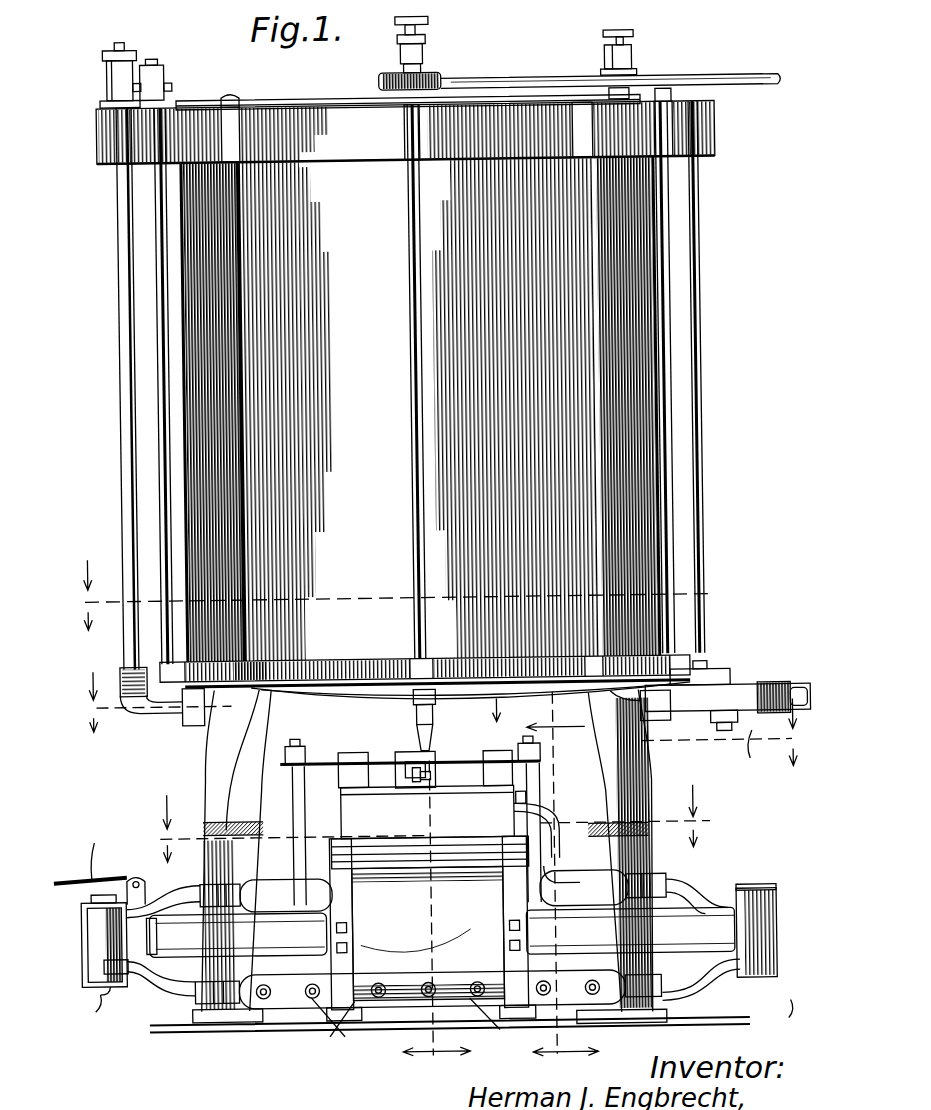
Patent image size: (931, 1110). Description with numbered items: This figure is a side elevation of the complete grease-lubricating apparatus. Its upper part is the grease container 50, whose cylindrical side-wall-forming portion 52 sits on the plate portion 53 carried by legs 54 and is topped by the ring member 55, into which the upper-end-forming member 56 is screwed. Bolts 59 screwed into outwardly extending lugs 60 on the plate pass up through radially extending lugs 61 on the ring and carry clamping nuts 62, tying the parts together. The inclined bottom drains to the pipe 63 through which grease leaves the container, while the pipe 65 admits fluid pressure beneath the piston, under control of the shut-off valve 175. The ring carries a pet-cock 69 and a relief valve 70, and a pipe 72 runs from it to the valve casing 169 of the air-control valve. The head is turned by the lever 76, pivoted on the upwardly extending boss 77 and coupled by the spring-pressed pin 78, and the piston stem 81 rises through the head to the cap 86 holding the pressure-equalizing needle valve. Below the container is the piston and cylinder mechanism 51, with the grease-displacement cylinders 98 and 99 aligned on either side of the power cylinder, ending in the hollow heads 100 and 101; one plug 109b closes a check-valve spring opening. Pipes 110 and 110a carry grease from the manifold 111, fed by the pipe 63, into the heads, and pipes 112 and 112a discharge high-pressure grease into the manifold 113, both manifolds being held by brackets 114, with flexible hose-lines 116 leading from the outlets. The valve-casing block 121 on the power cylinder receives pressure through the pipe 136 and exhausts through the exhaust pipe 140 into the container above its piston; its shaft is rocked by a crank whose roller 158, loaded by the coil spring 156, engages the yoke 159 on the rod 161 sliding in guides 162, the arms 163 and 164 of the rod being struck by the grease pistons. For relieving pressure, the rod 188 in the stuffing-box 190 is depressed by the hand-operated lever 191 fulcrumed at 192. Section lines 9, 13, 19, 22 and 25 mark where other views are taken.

The section line 9 is at (390, 591).
The section line 13— 13 is at (437, 719).
The section line 19— 19 is at (436, 823).
The section line 22 is at (562, 886).
The section line 25 is at (435, 922).
The grease container 50 is at (187, 327).
The piston and cylinder mechanism 51 is at (430, 928).
The cylindrical side-wall-forming portion 52 is at (660, 399).
The plate portion 53 is at (460, 666).
The legs 54 is at (208, 756).
The ring member 55 is at (405, 132).
The upper-end-forming member 56 is at (368, 101).
The bolts 59 is at (164, 216).
The outwardly extending lugs 60 is at (161, 663).
The radially extending lugs 61 is at (413, 133).
The clamping nuts 62 is at (242, 95).
The pipe 63 is at (429, 745).
The pipe 65 is at (658, 715).
The pet-cock 69 is at (163, 85).
The relief valve 70 is at (113, 66).
The pipe 72 is at (702, 264).
The lever 76 is at (517, 80).
The upwardly extending boss 77 is at (440, 73).
The spring-pressed pin 78 is at (626, 92).
The stem 81 is at (410, 66).
The cap 86 is at (432, 43).
The grease-displacement cylinder 98 is at (236, 935).
The grease-displacement cylinder 99 is at (630, 930).
The hollow head 100 is at (86, 912).
The hollow head 101 is at (773, 925).
The plug 109b is at (428, 1015).
The pipe 110 is at (164, 891).
The pipe 110a is at (686, 898).
The manifold 111 is at (602, 854).
The pipe 112 is at (159, 984).
The pipe 112a is at (704, 992).
The manifold 113 is at (282, 997).
The brackets 114 is at (415, 933).
The flexible hose-lines 116 is at (420, 1027).
The valve-casing block 121 is at (430, 827).
The pipe 136 is at (569, 861).
The exhaust pipe 140 is at (127, 262).
The coil spring 156 is at (416, 790).
The roller 158 is at (392, 791).
The yoke 159 is at (406, 757).
The rod 161 is at (310, 759).
The guides 162 is at (348, 751).
The arm 163 is at (297, 794).
The arm 164 is at (583, 802).
The valve casing 169 is at (707, 692).
The shut-off valve 175 is at (752, 758).
The rod 188 is at (95, 848).
The stuffing-box 190 is at (90, 934).
The hand-operated lever 191 is at (66, 876).
The fulcrum 192 is at (130, 873).